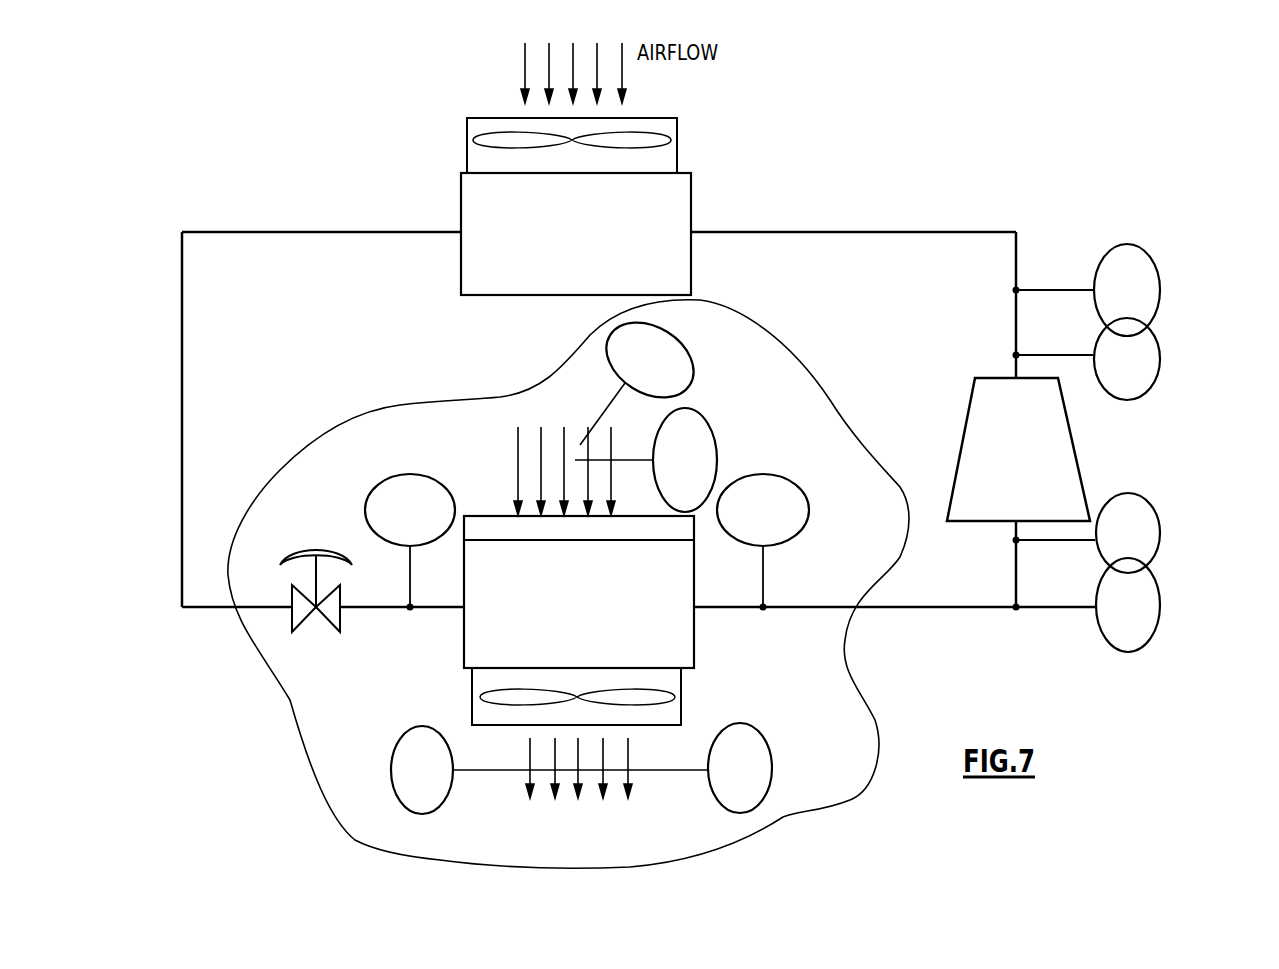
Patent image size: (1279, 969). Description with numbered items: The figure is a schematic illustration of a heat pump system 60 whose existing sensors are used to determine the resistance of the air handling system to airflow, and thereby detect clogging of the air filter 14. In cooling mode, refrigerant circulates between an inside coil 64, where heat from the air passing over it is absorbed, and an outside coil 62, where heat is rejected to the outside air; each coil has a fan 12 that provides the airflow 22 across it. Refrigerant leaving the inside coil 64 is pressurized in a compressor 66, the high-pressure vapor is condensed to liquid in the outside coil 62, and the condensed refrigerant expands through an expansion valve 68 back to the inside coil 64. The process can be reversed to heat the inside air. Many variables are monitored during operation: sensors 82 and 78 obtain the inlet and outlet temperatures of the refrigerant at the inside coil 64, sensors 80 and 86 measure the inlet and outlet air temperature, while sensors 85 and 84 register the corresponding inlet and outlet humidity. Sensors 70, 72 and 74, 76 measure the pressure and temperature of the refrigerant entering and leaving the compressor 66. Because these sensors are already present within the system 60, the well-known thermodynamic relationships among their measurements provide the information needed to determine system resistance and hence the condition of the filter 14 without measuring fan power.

The fan 12 is at (672, 125).
The air filter 14 is at (500, 515).
The airflow 22 is at (572, 812).
The heat pump system 60 is at (962, 155).
The outside coil 62 is at (691, 208).
The inside coil 64 is at (694, 640).
The compressor 66 is at (1084, 455).
The expansion valve 68 is at (332, 624).
The sensor 70 is at (1144, 252).
The sensor 72 is at (1150, 392).
The sensor 74 is at (1150, 507).
The sensor 76 is at (1150, 645).
The sensor 78 is at (784, 518).
The sensor 80 is at (717, 462).
The sensor 82 is at (372, 491).
The sensor 84 is at (450, 796).
The sensor 85 is at (608, 350).
The sensor 86 is at (710, 792).